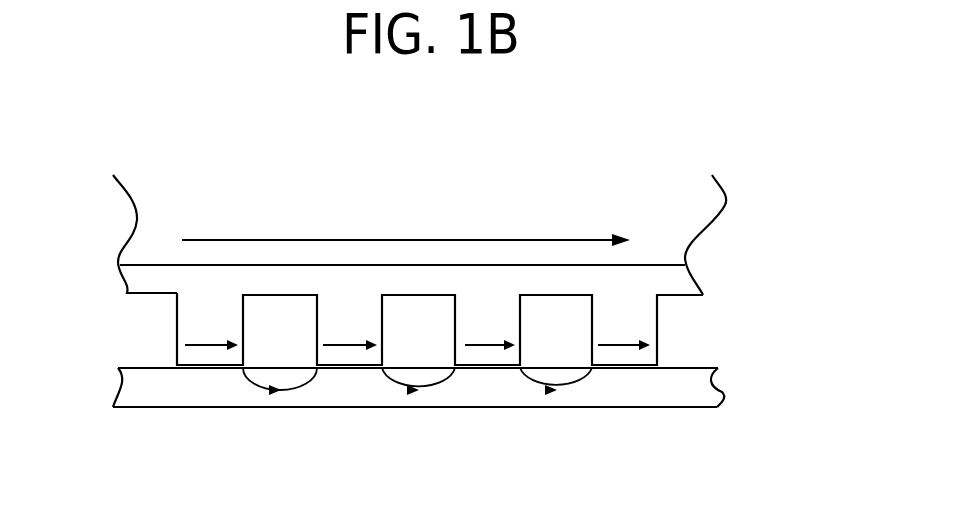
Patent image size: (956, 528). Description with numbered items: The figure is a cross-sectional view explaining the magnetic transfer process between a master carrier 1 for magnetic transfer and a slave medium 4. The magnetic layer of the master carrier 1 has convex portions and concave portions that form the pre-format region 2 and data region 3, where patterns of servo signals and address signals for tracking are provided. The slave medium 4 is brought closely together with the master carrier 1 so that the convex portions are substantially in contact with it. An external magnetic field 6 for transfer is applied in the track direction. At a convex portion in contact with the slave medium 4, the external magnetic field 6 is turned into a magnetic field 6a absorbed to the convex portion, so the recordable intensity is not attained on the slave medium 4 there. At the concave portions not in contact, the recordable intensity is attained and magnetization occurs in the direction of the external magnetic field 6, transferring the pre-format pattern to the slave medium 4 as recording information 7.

The master carrier for magnetic transfer 1 is at (178, 162).
The pre-format region 2 is at (670, 283).
The data region 3 is at (643, 322).
The slave medium 4 is at (703, 395).
The external magnetic field for transfer 6 is at (400, 240).
The magnetic field absorbed to the convex portion 6a is at (492, 350).
The recording information 7 is at (298, 393).